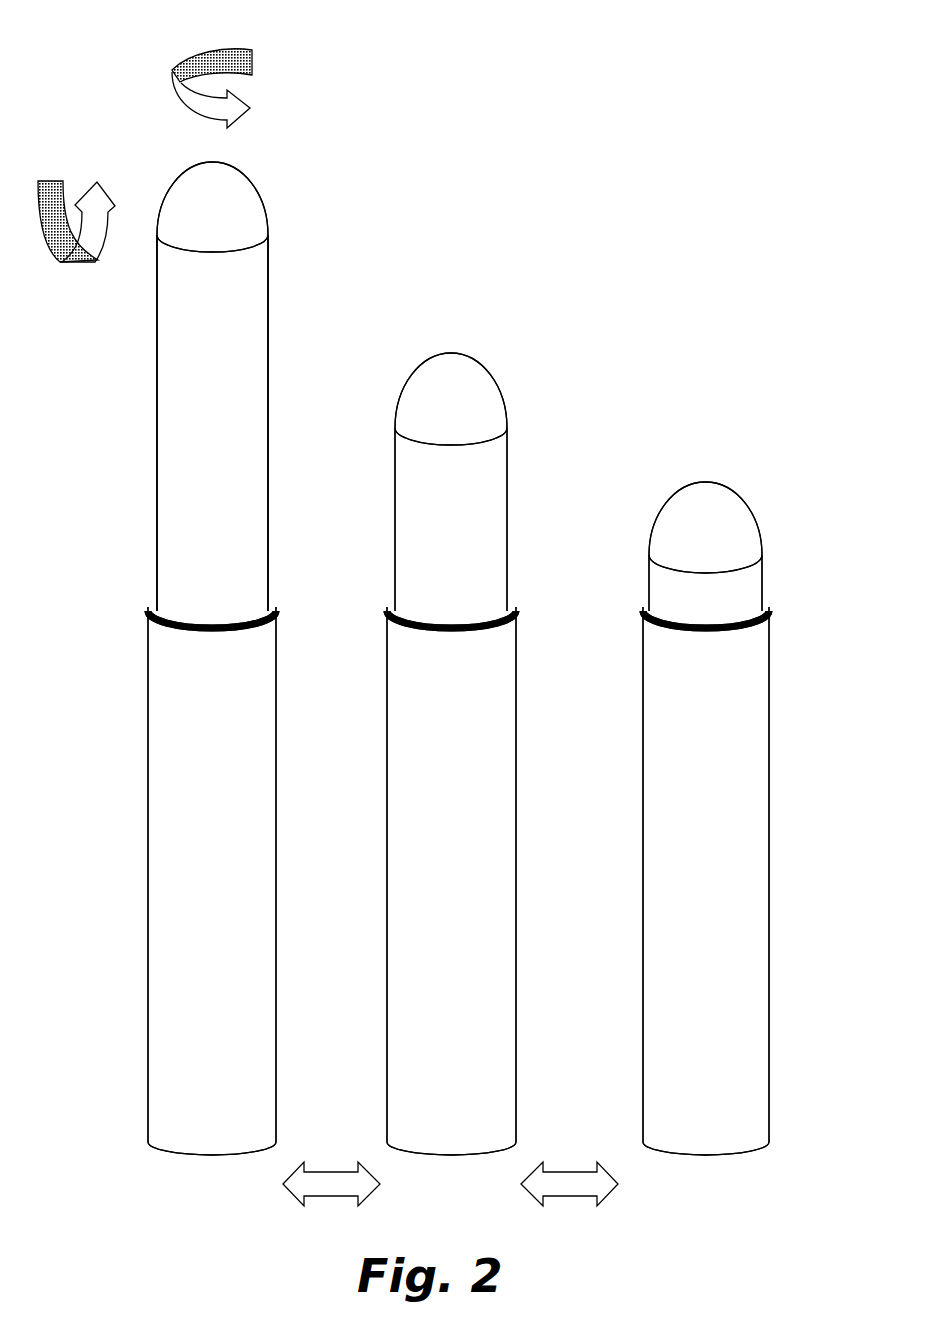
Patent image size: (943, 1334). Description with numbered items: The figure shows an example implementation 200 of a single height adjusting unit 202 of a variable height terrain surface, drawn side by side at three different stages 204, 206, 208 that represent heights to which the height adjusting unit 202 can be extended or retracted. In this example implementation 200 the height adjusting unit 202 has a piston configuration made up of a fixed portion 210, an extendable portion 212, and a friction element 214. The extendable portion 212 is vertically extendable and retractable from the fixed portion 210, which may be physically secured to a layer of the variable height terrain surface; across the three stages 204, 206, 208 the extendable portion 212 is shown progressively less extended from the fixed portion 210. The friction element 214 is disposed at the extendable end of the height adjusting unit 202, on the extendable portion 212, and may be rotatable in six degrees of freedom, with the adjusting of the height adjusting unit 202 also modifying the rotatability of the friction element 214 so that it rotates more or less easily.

The example implementation 200 is at (112, 42).
The height adjusting unit 202 is at (112, 358).
The stage 204 is at (280, 118).
The stage 206 is at (503, 325).
The stage 208 is at (757, 453).
The fixed portion 210 is at (194, 896).
The extendable portion 212 is at (194, 474).
The friction element 214 is at (194, 233).